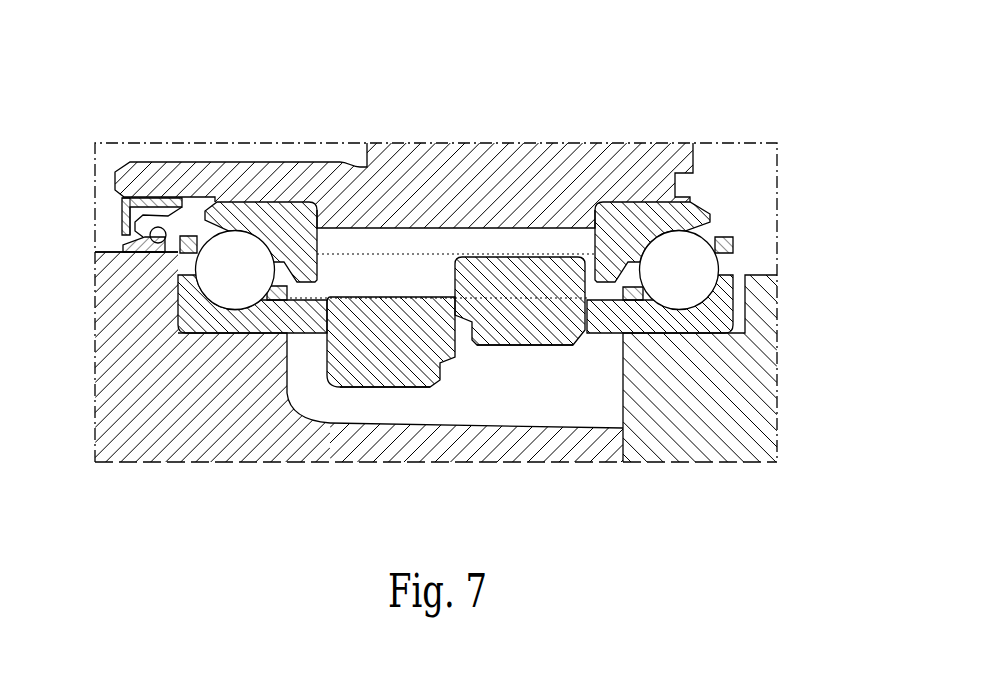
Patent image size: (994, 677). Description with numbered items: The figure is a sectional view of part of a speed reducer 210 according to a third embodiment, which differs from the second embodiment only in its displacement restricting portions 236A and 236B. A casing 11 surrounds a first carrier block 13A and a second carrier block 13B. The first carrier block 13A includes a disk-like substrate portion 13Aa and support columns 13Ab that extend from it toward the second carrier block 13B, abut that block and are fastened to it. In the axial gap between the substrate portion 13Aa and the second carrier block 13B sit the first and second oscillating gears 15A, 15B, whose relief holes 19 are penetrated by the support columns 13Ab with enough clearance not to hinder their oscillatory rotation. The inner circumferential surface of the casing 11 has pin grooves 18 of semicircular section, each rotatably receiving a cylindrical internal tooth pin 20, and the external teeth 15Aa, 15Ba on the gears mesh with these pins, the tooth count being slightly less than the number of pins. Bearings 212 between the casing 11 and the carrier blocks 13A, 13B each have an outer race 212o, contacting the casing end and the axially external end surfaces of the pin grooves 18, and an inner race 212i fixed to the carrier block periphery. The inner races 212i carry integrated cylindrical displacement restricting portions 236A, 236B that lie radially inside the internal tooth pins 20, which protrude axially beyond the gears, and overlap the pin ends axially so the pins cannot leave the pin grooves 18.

The casing 11 is at (322, 162).
The internal tooth pin 20 is at (360, 229).
The pin groove 18 is at (402, 245).
The first oscillating gear 15A is at (367, 293).
The second oscillating gear 15B is at (553, 249).
The external teeth 15Aa is at (403, 296).
The external teeth 15Ba is at (527, 256).
The speed reducer 210 is at (755, 136).
The bearing 212 is at (193, 216).
The outer race 212o is at (238, 208).
The inner race 212i is at (184, 336).
The first carrier block 13A is at (95, 396).
The substrate portion 13Aa is at (117, 270).
The support column 13Ab is at (510, 445).
The second carrier block 13B is at (760, 422).
The displacement restricting portion 236A is at (287, 394).
The displacement restricting portion 236B is at (622, 355).
The relief hole 19 is at (372, 389).